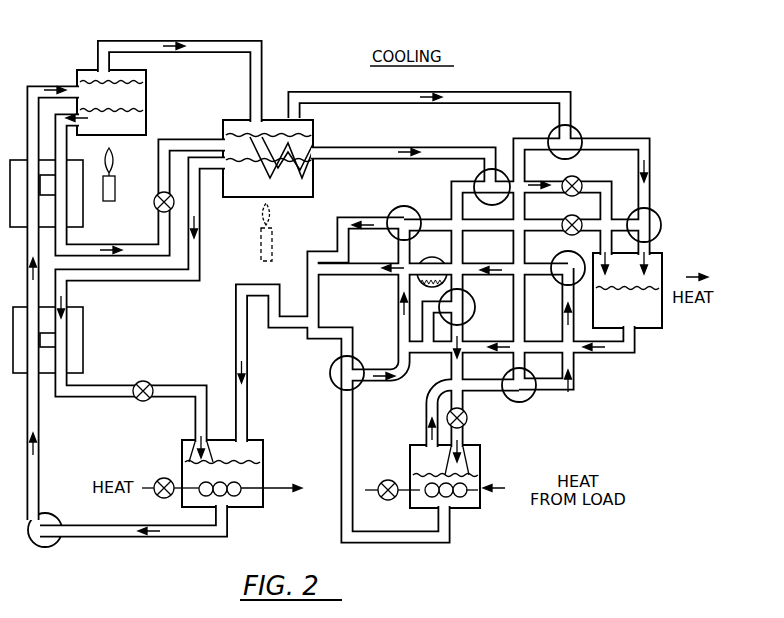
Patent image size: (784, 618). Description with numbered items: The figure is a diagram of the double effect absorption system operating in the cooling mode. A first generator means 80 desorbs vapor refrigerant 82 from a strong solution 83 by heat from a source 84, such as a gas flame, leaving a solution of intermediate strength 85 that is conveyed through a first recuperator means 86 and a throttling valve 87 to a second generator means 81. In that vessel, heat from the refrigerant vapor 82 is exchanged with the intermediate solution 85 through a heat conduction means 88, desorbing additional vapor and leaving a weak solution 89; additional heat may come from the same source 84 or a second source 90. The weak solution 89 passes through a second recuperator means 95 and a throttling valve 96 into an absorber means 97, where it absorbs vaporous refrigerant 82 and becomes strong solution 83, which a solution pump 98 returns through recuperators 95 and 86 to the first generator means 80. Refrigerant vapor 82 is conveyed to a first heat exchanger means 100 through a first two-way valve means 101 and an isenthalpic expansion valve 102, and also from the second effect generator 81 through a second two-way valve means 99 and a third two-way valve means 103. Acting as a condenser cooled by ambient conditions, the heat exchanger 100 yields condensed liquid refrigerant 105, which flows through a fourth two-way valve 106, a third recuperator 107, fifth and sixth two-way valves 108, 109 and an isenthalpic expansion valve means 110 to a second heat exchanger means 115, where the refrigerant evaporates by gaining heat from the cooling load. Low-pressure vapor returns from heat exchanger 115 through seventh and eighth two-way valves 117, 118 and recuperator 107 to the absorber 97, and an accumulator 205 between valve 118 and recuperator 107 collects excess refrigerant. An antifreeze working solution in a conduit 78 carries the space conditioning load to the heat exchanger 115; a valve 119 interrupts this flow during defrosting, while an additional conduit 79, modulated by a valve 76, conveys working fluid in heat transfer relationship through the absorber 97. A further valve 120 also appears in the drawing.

The valve 76 is at (162, 478).
The conduit 78 is at (427, 505).
The conduit 79 is at (283, 487).
The first generator means 80 is at (147, 90).
The second generator means 81 is at (314, 121).
The vapor refrigerant 82 is at (98, 64).
The strong solution 83 is at (88, 95).
The heat source 84 is at (114, 172).
The intermediate solution 85 is at (138, 124).
The first recuperator means 86 is at (82, 220).
The throttling valve 87 is at (153, 203).
The heat conduction means 88 is at (303, 168).
The weak solution 89 is at (250, 183).
The second heat source 90 is at (273, 243).
The second recuperator means 95 is at (84, 341).
The throttling valve 96 is at (147, 382).
The absorber means 97 is at (264, 454).
The solution pump 98 is at (54, 547).
The second two-way valve means 99 is at (580, 127).
The first heat exchanger means 100 is at (663, 258).
The first two-way valve means 101 is at (478, 176).
The isenthalpic expansion valve 102 is at (574, 177).
The third two-way valve means 103 is at (660, 212).
The condensed liquid refrigerant 105 is at (654, 320).
The fourth two-way valve 106 is at (404, 207).
The third recuperator 107 is at (306, 268).
The fifth two-way valve 108 is at (355, 388).
The sixth two-way valve 109 is at (477, 295).
The isenthalpic expansion valve means 110 is at (468, 420).
The second heat exchanger means 115 is at (481, 457).
The seventh two-way valve 117 is at (535, 398).
The eighth two-way valve 118 is at (558, 256).
The valve 119 is at (388, 480).
The valve 120 is at (566, 216).
The accumulator 205 is at (419, 261).